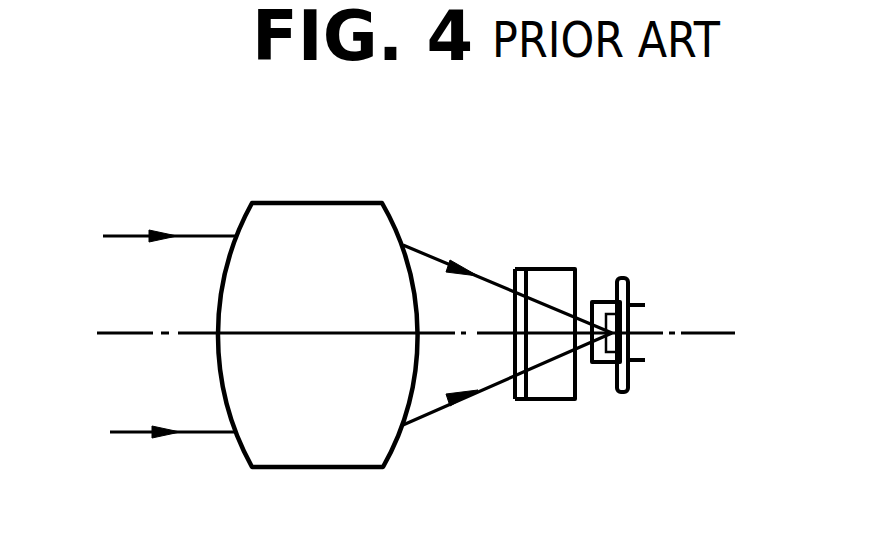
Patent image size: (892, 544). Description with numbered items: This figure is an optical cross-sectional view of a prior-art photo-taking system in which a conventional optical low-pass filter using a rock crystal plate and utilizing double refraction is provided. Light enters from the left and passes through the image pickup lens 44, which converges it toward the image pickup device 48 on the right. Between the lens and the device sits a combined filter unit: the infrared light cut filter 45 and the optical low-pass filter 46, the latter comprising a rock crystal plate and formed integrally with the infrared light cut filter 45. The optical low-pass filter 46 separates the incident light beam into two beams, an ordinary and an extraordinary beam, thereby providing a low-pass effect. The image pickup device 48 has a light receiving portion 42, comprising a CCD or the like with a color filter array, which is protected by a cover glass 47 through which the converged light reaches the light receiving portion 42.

The image pickup lens 44 is at (335, 214).
The infrared light cut filter 45 is at (520, 269).
The optical low-pass filter 46 is at (547, 270).
The cover glass 47 is at (592, 302).
The image pickup device 48 is at (622, 279).
The light receiving portion 42 is at (605, 365).